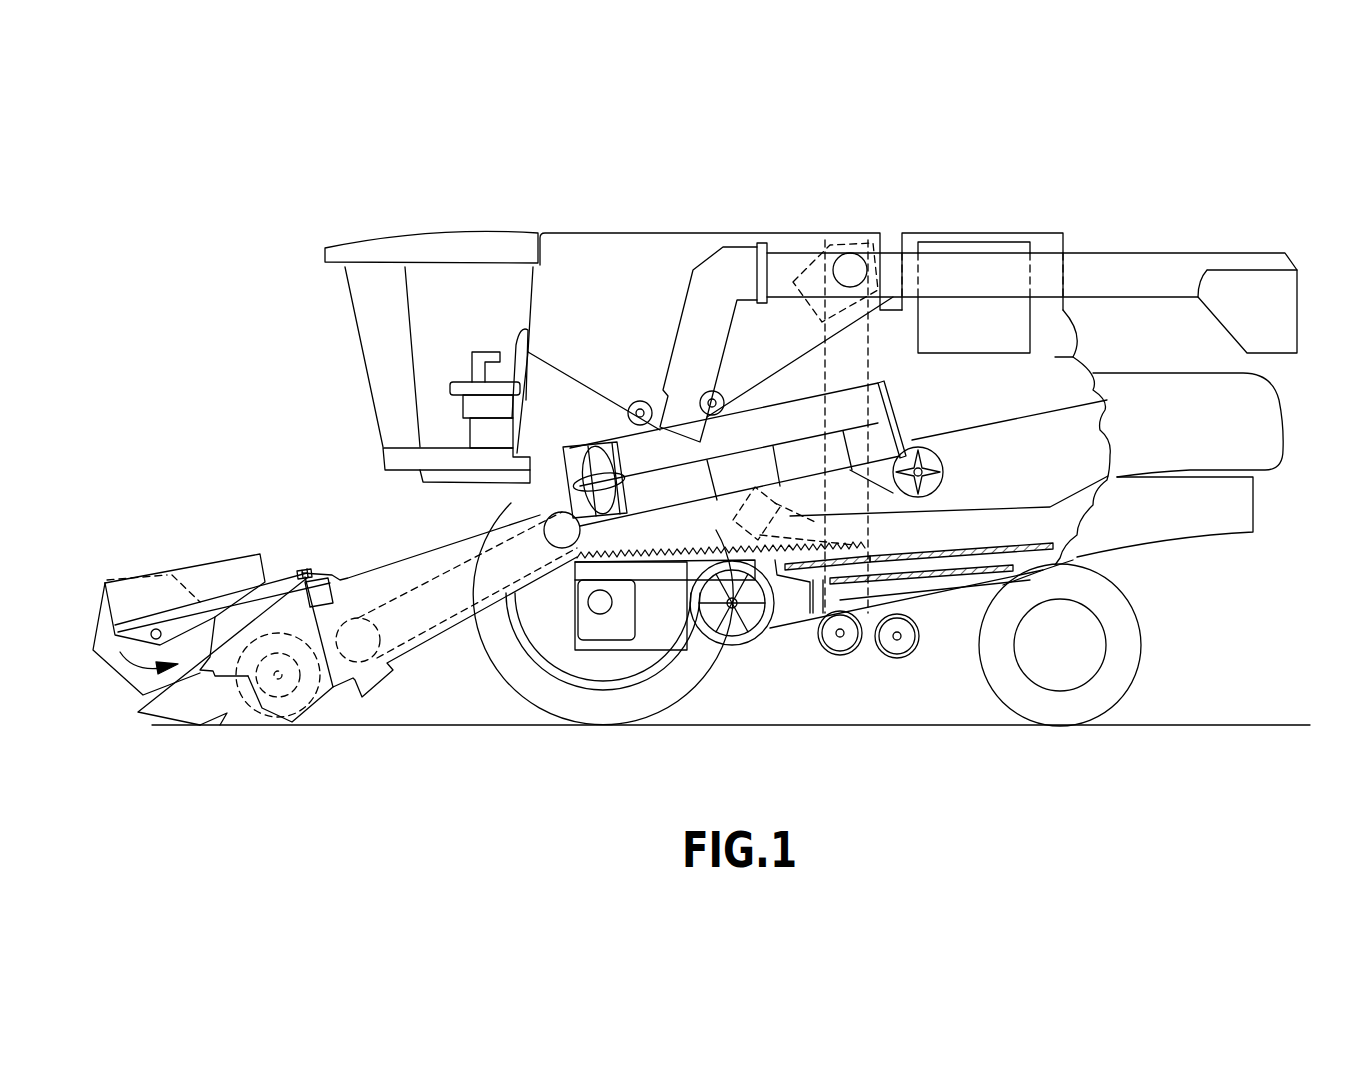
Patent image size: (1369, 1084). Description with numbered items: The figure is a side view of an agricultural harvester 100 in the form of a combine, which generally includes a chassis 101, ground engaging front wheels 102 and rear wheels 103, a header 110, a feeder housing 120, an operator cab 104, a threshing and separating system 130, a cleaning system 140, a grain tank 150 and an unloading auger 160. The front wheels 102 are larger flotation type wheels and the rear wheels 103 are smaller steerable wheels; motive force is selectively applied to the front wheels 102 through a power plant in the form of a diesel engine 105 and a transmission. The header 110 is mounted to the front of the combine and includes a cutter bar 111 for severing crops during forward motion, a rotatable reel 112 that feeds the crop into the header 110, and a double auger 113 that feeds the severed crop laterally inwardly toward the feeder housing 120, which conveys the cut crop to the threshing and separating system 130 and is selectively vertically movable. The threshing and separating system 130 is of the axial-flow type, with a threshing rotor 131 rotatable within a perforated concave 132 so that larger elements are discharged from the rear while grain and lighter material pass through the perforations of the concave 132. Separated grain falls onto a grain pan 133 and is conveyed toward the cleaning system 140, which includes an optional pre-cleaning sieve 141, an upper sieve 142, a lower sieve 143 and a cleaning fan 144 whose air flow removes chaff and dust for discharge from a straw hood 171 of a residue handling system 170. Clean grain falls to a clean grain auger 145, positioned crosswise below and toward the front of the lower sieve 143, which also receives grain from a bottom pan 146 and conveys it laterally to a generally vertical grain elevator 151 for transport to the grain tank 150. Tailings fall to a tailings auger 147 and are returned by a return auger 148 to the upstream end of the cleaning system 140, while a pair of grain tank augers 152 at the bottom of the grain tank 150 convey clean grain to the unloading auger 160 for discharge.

The agricultural harvester 100 is at (422, 228).
The chassis 101 is at (1080, 560).
The front wheels 102 is at (500, 680).
The rear wheels 103 is at (1141, 665).
The operator cab 104 is at (355, 337).
The diesel engine 105 is at (960, 243).
The header 110 is at (186, 542).
The cutter bar 111 is at (202, 722).
The rotatable reel 112 is at (100, 622).
The double auger 113 is at (278, 692).
The feeder housing 120 is at (380, 560).
The threshing and separating system 130 is at (505, 496).
The threshing rotor 131 is at (600, 462).
The perforated concave 132 is at (762, 432).
The grain pan 133 is at (576, 568).
The cleaning system 140 is at (796, 675).
The pre-cleaning sieve 141 is at (880, 548).
The upper sieve 142 is at (978, 545).
The lower sieve 143 is at (945, 582).
The cleaning fan 144 is at (738, 646).
The clean grain auger 145 is at (843, 656).
The bottom pan 146 is at (1003, 586).
The tailings auger 147 is at (898, 659).
The return auger 148 is at (800, 515).
The grain tank 150 is at (580, 247).
The grain elevator 151 is at (877, 356).
The grain tank augers 152 is at (640, 401).
The unloading auger 160 is at (1150, 262).
The residue handling system 170 is at (1246, 553).
The straw hood 171 is at (1262, 417).